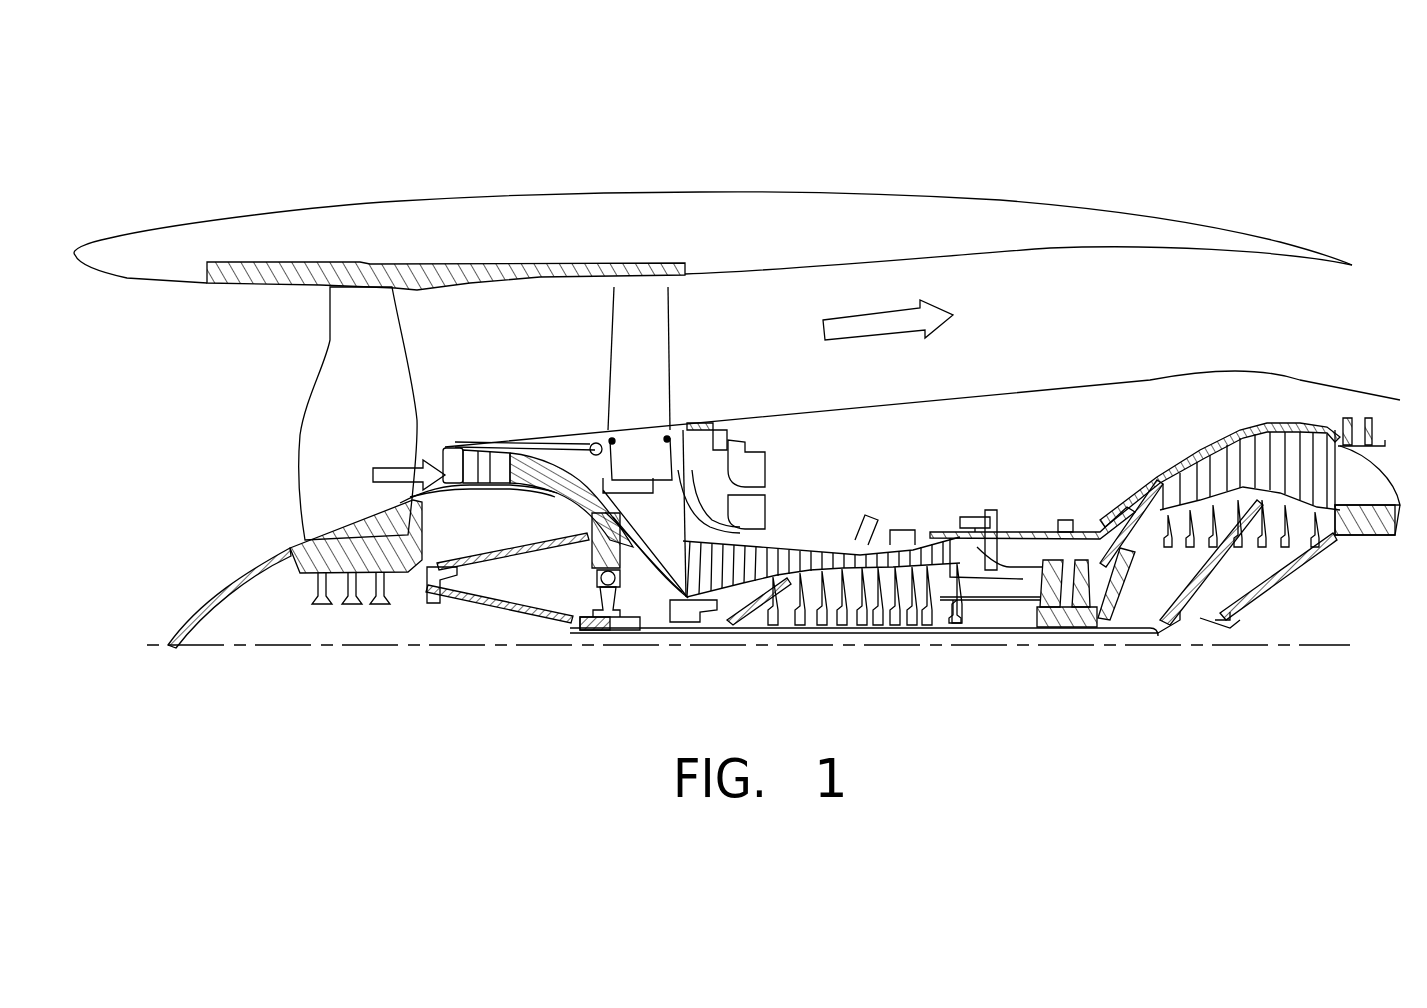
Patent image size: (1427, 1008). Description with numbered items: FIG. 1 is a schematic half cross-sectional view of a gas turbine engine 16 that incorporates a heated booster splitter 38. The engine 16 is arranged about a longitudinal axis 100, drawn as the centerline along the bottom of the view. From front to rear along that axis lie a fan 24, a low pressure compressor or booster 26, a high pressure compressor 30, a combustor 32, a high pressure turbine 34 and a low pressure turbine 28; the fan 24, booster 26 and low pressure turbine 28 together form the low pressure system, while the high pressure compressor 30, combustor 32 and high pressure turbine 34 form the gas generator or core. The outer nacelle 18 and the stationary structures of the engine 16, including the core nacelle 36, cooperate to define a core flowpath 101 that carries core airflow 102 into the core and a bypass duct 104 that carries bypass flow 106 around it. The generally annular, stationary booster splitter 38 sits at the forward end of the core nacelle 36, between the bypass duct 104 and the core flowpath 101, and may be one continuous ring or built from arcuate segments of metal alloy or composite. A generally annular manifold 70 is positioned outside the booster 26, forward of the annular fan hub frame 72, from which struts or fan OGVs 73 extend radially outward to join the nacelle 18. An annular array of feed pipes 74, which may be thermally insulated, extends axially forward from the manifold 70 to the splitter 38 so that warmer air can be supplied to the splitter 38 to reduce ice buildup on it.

The gas turbine engine 16 is at (1216, 184).
The nacelle 18 is at (551, 193).
The fan 24 is at (315, 462).
The booster 26 is at (457, 525).
The low pressure turbine 28 is at (1190, 453).
The high pressure compressor 30 is at (815, 530).
The combustor 32 is at (995, 572).
The high pressure turbine 34 is at (1065, 510).
The core nacelle 36 is at (1150, 380).
The booster splitter 38 is at (448, 450).
The manifold 70 is at (597, 443).
The fan hub frame 72 is at (643, 450).
The fan OGVs 73 is at (655, 364).
The feed pipes 74 is at (543, 453).
The longitudinal axis 100 is at (1225, 645).
The core flowpath 101 is at (540, 450).
The core airflow 102 is at (397, 466).
The bypass duct 104 is at (1047, 335).
The bypass flow 106 is at (873, 339).